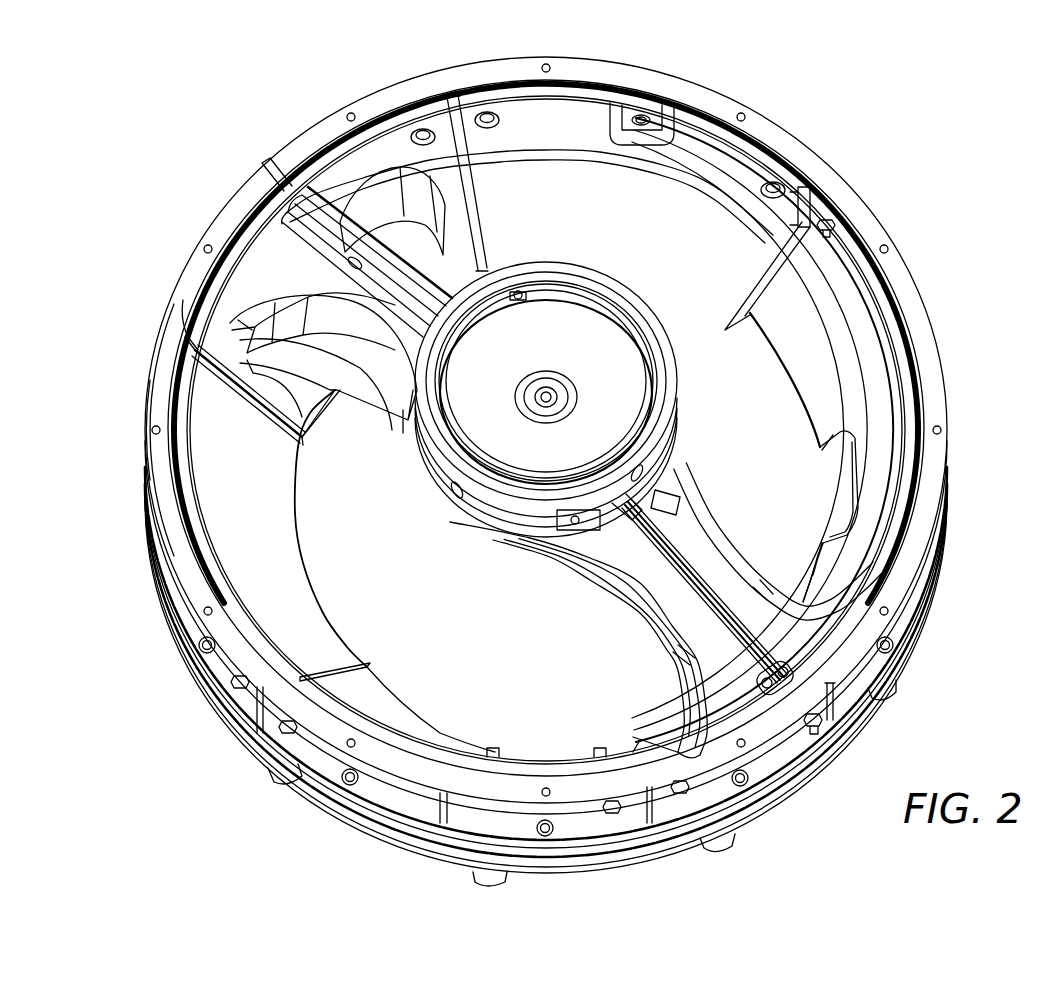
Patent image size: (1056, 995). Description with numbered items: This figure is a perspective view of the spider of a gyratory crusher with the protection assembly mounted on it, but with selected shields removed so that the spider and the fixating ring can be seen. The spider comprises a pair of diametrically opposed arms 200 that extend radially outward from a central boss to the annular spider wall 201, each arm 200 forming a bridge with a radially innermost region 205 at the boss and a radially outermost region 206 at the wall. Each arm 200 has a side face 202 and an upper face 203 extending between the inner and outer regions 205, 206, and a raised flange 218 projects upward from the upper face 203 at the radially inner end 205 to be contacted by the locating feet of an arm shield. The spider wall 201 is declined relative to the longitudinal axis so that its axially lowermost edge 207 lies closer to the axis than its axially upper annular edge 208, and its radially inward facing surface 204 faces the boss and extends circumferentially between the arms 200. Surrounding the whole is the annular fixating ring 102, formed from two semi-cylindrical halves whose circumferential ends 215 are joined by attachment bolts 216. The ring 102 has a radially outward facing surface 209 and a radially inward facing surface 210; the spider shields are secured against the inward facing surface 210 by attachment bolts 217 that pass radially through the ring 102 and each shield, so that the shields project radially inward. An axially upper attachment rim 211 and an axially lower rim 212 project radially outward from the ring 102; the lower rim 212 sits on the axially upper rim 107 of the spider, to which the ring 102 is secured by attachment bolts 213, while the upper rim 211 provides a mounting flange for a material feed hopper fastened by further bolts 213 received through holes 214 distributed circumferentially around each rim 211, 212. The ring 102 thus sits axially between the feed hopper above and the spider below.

The annular fixating ring 102 is at (150, 453).
The axially upper rim of spider 107 is at (868, 297).
The spider arms 200 is at (666, 610).
The spider wall 201 is at (787, 383).
The side face 202 is at (617, 600).
The upper face 203 is at (720, 567).
The radially inward facing surface 204 is at (843, 342).
The radially innermost region 205 is at (577, 542).
The radially outermost region 206 is at (715, 720).
The axially lowermost edge 207 is at (760, 340).
The axially upper annular edge 208 is at (880, 360).
The radially outward facing surface 209 is at (470, 805).
The radially inward facing surface 210 is at (850, 248).
The axially upper attachment rim 211 is at (925, 318).
The axially lower rim 212 is at (320, 765).
The attachment bolts 213 is at (748, 785).
The holes 214 is at (941, 430).
The circumferential ends 215 is at (833, 703).
The attachment bolts 216 is at (810, 732).
The attachment bolts 217 is at (421, 129).
The raised flange 218 is at (672, 503).